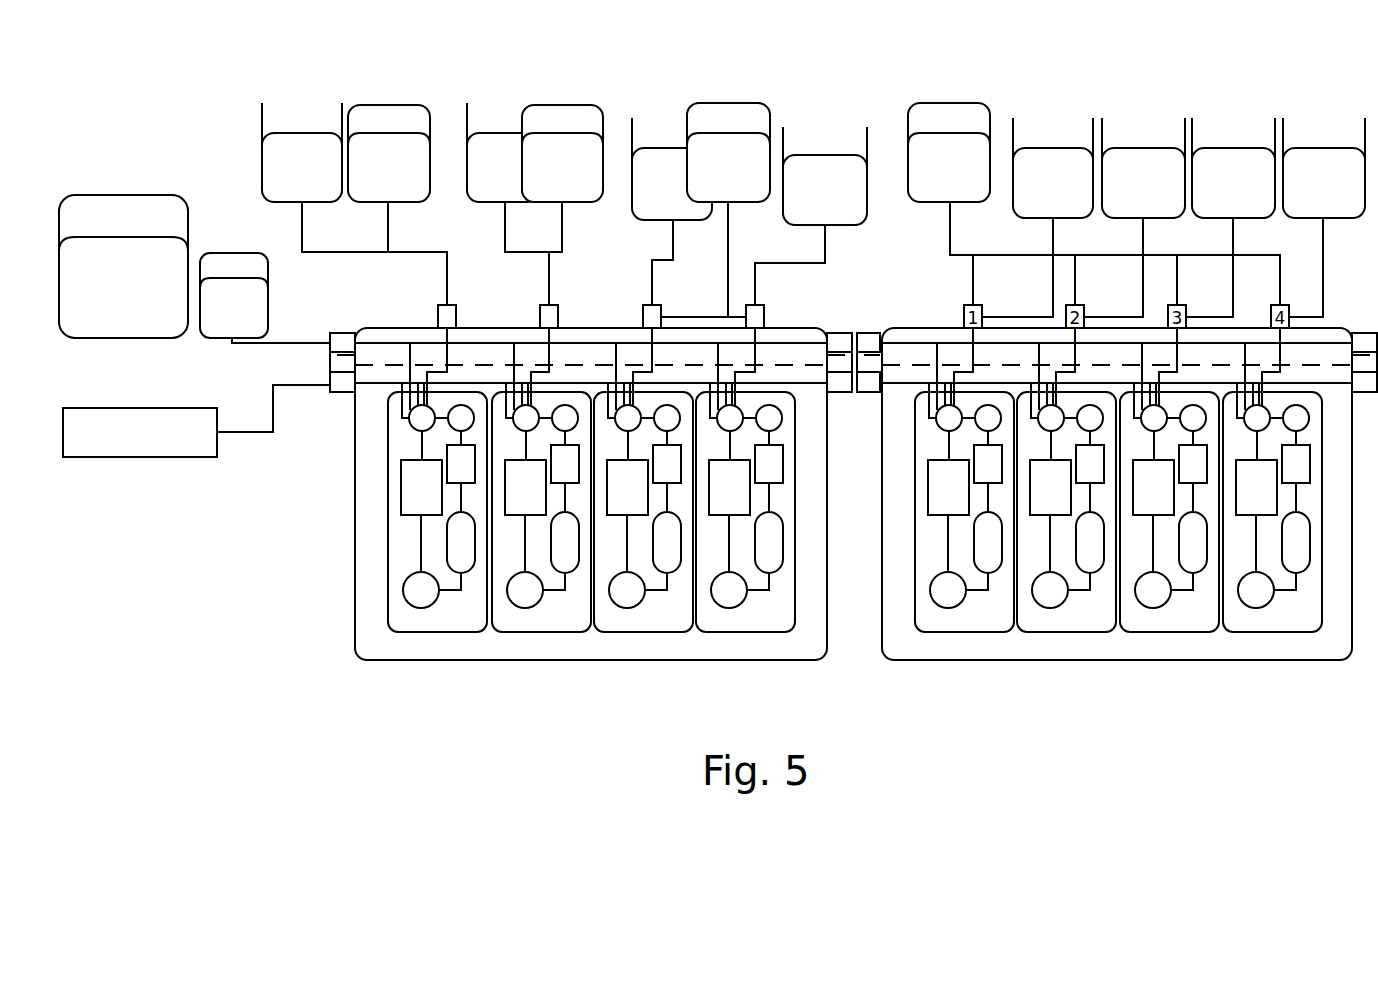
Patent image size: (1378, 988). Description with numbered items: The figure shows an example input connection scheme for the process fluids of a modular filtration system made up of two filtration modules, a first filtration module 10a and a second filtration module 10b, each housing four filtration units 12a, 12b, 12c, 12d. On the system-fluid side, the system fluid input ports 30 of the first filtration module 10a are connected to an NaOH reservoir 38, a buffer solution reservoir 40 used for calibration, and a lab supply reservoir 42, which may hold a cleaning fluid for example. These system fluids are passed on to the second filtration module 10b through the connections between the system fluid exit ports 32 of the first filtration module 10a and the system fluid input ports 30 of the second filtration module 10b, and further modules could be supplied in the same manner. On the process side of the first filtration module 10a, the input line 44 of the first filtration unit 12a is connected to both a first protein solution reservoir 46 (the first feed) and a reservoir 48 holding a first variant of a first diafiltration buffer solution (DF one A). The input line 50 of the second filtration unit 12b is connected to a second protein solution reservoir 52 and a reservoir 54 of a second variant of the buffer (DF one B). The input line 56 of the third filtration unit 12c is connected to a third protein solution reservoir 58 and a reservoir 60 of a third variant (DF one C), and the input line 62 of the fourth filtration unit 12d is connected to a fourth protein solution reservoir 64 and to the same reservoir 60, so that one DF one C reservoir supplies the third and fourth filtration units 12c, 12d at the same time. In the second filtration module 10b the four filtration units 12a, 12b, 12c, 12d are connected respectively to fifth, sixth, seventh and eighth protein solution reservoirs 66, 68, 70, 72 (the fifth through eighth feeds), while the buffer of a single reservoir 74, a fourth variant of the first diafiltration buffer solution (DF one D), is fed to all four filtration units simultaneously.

The first filtration module 10a is at (722, 660).
The second filtration module 10b is at (1232, 660).
The first filtration unit 12a is at (419, 618).
The second filtration unit 12b is at (528, 618).
The third filtration unit 12c is at (631, 618).
The fourth filtration unit 12d is at (778, 618).
The system fluid input ports 30 is at (345, 333).
The system fluid exit ports 32 is at (837, 333).
The NaOH reservoir 38 is at (120, 195).
The buffer solution reservoir 40 is at (217, 253).
The lab supply reservoir 42 is at (138, 457).
The input line 44 is at (438, 317).
The first protein solution reservoir 46 is at (304, 122).
The reservoir of a first variant of a first diafiltration buffer solution 48 is at (386, 105).
The input line 50 is at (540, 317).
The second protein solution reservoir 52 is at (487, 122).
The reservoir of a second variant of the first diafiltration buffer solution 54 is at (568, 105).
The input line 56 is at (643, 317).
The third protein solution reservoir 58 is at (666, 133).
The reservoir of a third variant of the first diafiltration buffer solution 60 is at (728, 103).
The input line 62 is at (746, 317).
The fourth protein solution reservoir 64 is at (823, 140).
The fifth protein solution reservoir 66 is at (1052, 133).
The sixth protein solution reservoir 68 is at (1143, 133).
The seventh protein solution reservoir 70 is at (1232, 133).
The eighth protein solution reservoir 72 is at (1322, 133).
The reservoir of a fourth variant of the first diafiltration buffer solution 74 is at (946, 103).